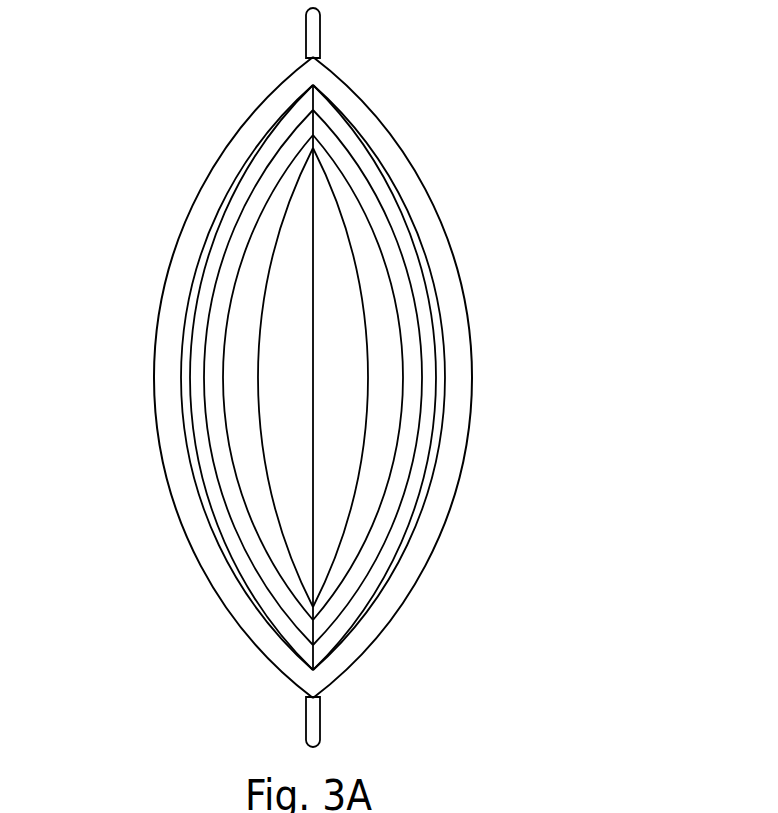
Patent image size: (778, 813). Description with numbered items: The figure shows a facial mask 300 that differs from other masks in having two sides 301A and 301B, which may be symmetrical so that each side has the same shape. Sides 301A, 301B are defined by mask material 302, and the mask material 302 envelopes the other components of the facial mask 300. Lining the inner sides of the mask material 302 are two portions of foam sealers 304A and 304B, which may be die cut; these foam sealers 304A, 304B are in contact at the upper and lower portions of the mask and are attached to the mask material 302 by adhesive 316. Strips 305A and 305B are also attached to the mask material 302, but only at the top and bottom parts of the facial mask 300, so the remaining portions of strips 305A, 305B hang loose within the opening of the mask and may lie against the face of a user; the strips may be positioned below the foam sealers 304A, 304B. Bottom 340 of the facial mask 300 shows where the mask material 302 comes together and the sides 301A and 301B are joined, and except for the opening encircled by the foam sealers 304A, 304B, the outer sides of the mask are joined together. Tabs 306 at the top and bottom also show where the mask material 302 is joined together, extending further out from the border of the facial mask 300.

The facial mask 300 is at (603, 157).
The first side 301A is at (260, 105).
The second side 301B is at (373, 105).
The mask material 302 is at (412, 177).
The first foam sealer 304A is at (200, 280).
The second foam sealer 304B is at (415, 265).
The first strip 305A is at (285, 225).
The second strip 305B is at (347, 225).
The tabs 306 is at (308, 33).
The adhesive 316 is at (185, 352).
The bottom 340 is at (315, 463).